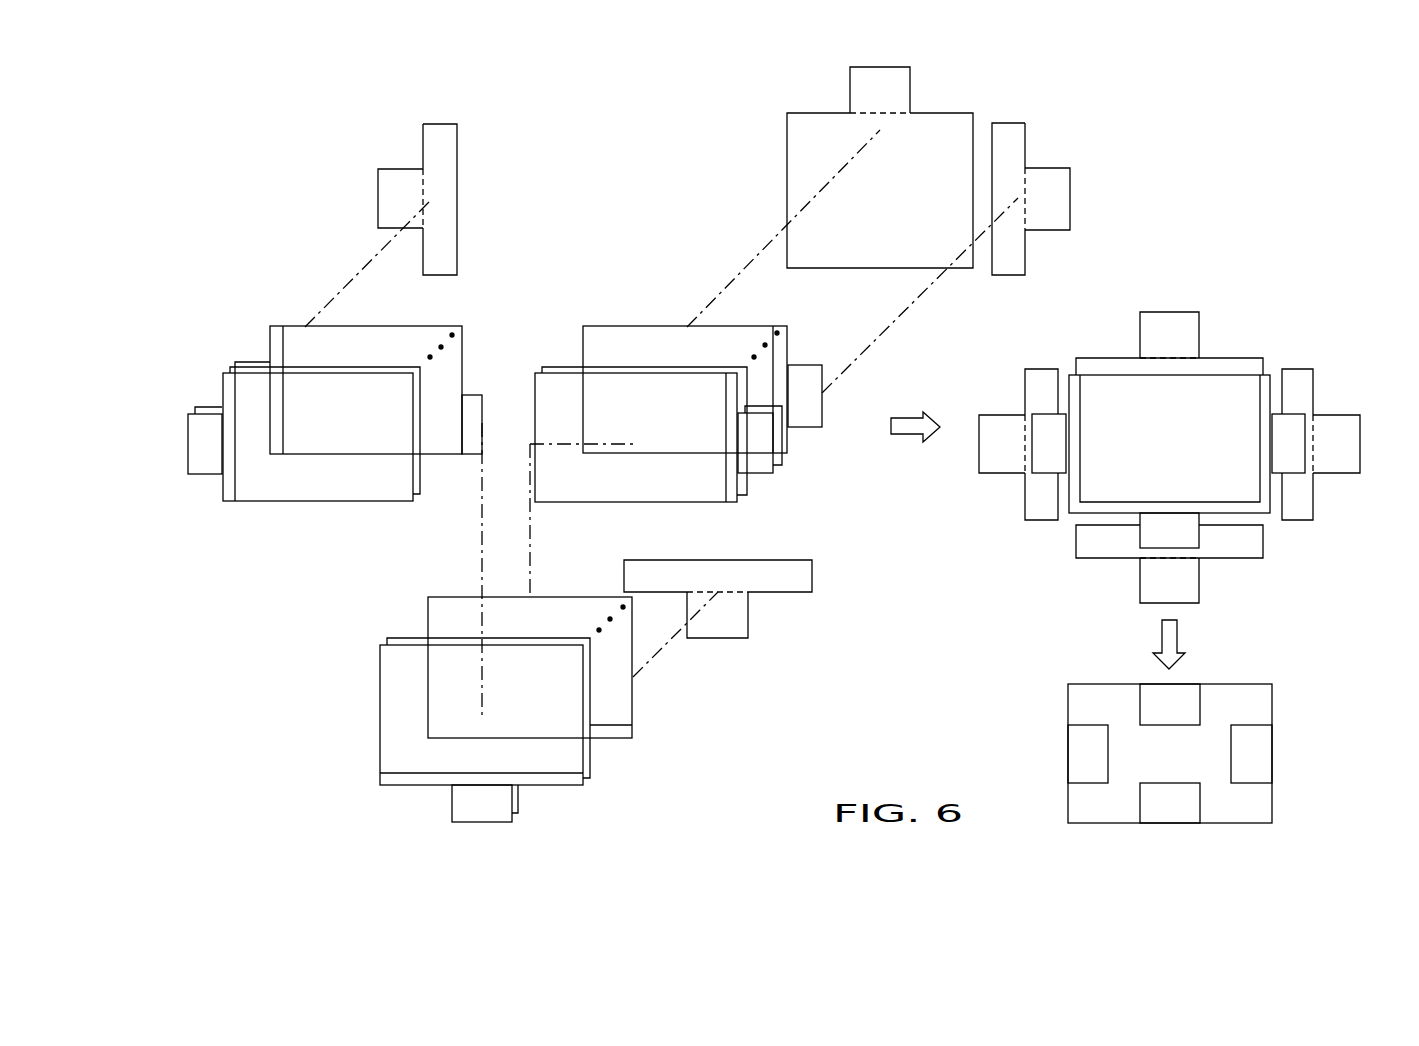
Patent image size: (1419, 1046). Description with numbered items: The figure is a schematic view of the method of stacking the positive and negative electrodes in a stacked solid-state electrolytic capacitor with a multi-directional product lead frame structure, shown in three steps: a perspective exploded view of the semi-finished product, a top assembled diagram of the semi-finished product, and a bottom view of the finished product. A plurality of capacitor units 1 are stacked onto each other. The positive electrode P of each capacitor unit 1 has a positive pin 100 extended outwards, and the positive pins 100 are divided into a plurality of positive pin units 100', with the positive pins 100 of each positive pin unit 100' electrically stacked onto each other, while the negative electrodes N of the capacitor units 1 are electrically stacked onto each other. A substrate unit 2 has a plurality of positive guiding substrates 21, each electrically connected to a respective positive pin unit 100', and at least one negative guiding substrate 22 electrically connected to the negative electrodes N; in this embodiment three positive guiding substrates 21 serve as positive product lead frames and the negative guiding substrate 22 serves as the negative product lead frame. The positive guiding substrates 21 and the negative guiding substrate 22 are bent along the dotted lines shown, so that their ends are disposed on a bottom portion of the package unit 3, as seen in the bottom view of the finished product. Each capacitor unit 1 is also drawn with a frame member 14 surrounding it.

The capacitor unit 1 is at (306, 505).
The substrate unit 2 is at (337, 114).
The package unit 3 is at (1275, 698).
The insulating frame 14 is at (228, 490).
The positive guiding substrate 21 is at (377, 188).
The negative guiding substrate 22 is at (915, 86).
The positive pin 100 is at (514, 560).
The positive pin unit 100' is at (766, 553).
The negative electrode N is at (367, 480).
The positive electrode P is at (185, 465).